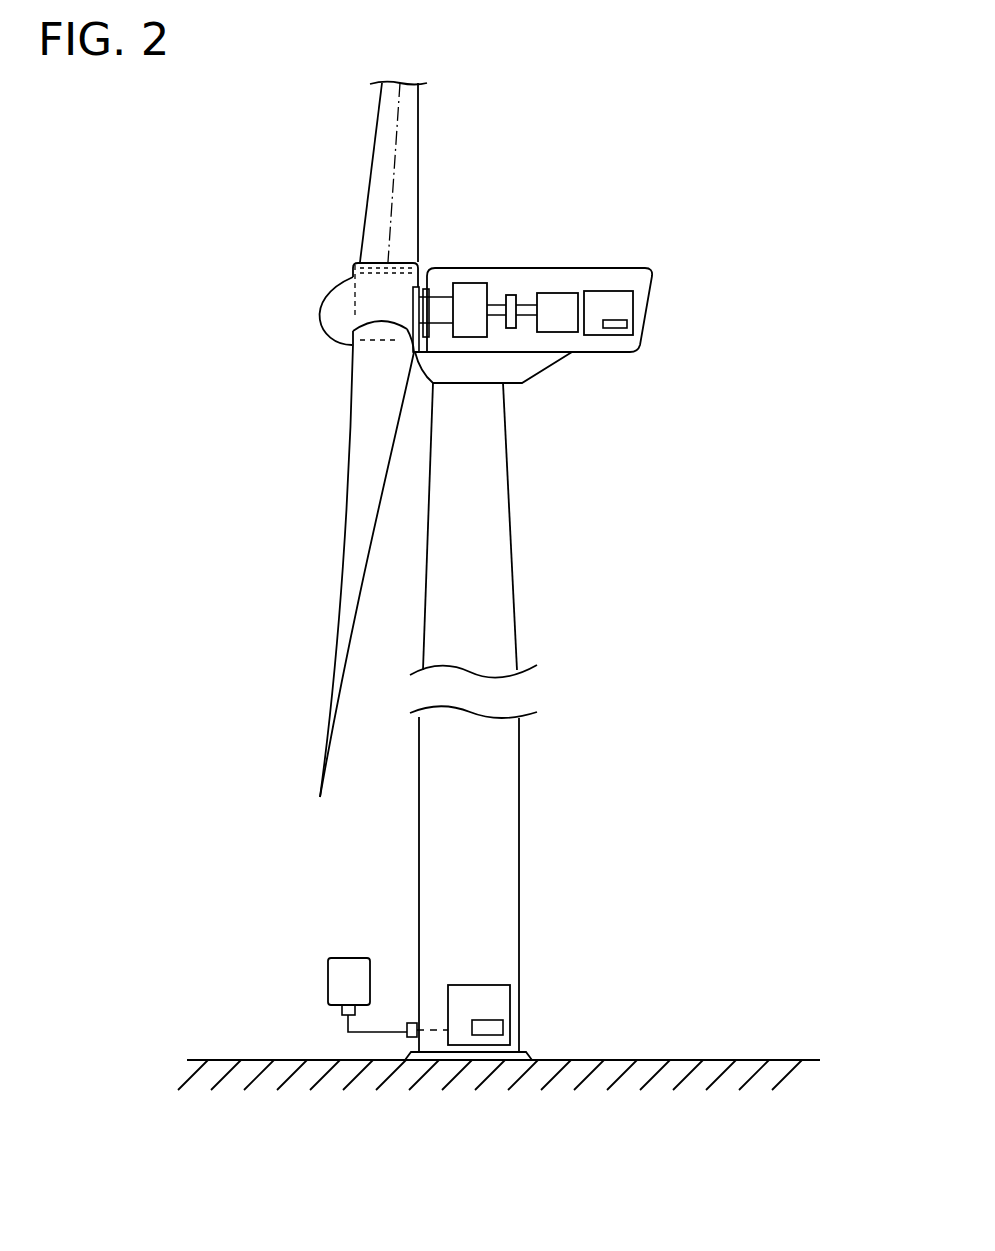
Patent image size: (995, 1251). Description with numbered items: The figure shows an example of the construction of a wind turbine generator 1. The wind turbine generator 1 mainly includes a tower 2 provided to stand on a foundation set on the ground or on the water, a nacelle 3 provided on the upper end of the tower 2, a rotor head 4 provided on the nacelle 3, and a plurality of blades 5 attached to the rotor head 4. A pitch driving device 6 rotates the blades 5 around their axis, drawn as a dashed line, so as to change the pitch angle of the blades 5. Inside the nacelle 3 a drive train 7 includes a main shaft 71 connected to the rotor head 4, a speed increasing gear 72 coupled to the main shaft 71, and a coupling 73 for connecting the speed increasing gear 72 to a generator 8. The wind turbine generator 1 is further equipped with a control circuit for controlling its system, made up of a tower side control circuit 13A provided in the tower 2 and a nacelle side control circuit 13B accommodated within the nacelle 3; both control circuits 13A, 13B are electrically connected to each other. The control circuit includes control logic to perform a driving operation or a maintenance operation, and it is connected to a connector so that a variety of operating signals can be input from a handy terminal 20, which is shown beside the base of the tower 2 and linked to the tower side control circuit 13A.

The wind turbine generator 1 is at (650, 458).
The tower 2 is at (498, 577).
The nacelle 3 is at (650, 307).
The rotor head 4 is at (285, 308).
The blades 5 is at (372, 158).
The pitch driving device 6 is at (373, 298).
The drive train 7 is at (512, 342).
The generator 8 is at (565, 333).
The tower side control circuit 13A is at (503, 1005).
The nacelle side control circuit 13B is at (615, 300).
The handy terminal 20 is at (345, 958).
The main shaft 71 is at (437, 327).
The speed increasing gear 72 is at (465, 283).
The coupling 73 is at (510, 295).